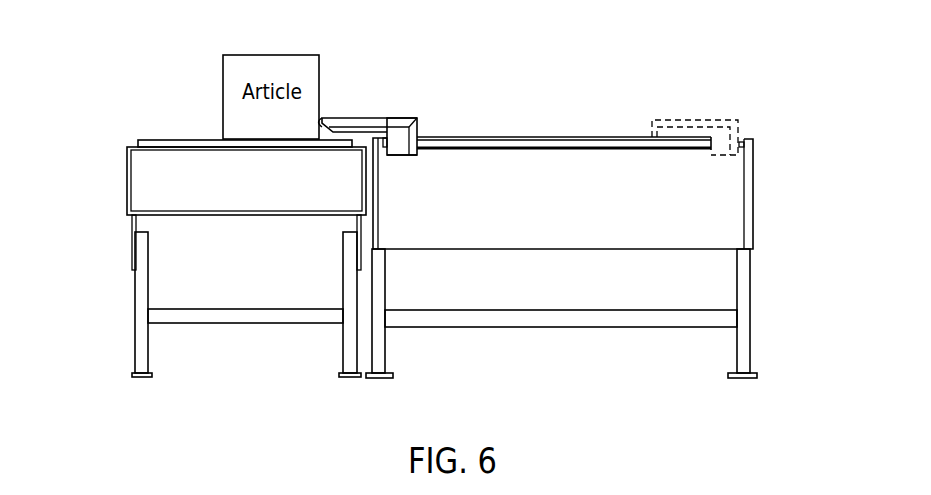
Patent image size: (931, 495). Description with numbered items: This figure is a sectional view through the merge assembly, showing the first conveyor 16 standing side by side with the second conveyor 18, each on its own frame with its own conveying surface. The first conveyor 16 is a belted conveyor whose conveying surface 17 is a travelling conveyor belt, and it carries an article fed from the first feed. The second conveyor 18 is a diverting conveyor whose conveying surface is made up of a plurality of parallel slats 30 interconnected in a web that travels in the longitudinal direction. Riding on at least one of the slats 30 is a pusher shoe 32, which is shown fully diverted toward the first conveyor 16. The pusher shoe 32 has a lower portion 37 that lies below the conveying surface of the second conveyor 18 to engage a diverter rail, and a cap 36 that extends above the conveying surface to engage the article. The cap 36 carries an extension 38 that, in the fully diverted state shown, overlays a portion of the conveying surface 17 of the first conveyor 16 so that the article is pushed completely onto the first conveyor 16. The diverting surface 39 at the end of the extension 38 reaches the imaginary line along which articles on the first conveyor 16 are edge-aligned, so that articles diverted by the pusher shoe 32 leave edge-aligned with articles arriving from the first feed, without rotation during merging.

The first conveyor 16 is at (119, 181).
The conveying surface 17 is at (151, 126).
The second conveyor 18 is at (760, 161).
The slats 30 is at (569, 150).
The pusher shoe 32 is at (400, 124).
The cap 36 is at (419, 124).
The lower portion 37 is at (410, 156).
The extension 38 is at (360, 117).
The diverting surface 39 is at (323, 117).